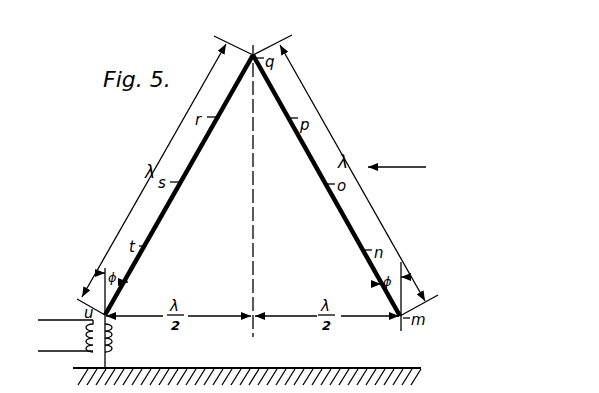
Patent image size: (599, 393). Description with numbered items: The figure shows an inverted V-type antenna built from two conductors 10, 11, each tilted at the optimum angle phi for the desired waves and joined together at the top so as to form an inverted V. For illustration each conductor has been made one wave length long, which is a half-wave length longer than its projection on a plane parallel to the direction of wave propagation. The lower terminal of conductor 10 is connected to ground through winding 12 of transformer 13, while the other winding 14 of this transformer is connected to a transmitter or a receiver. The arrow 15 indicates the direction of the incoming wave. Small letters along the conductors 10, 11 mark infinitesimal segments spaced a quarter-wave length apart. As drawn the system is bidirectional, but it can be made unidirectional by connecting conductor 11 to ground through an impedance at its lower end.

The conductor 10 is at (184, 176).
The conductor 11 is at (321, 176).
The winding 12 is at (110, 335).
The transformer 13 is at (93, 353).
The winding 14 is at (78, 337).
The arrow 15 is at (383, 168).